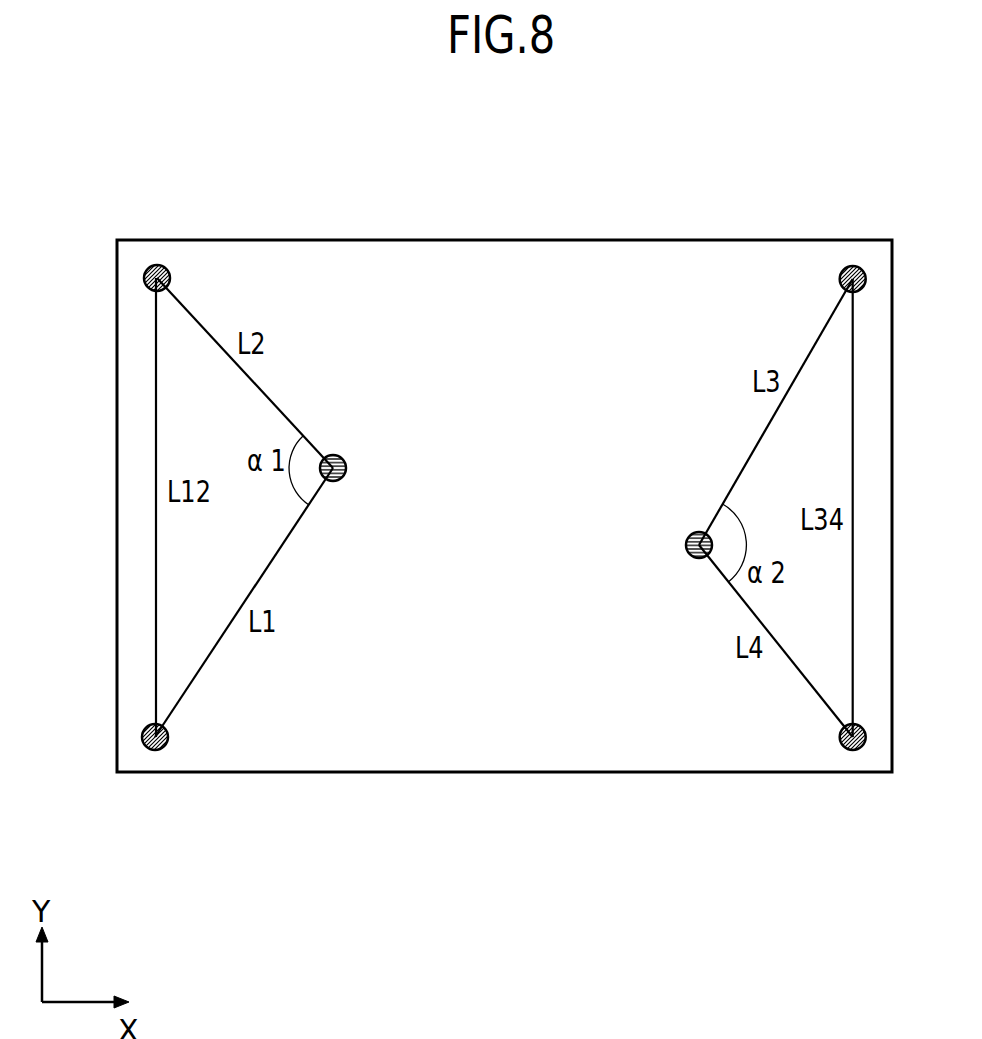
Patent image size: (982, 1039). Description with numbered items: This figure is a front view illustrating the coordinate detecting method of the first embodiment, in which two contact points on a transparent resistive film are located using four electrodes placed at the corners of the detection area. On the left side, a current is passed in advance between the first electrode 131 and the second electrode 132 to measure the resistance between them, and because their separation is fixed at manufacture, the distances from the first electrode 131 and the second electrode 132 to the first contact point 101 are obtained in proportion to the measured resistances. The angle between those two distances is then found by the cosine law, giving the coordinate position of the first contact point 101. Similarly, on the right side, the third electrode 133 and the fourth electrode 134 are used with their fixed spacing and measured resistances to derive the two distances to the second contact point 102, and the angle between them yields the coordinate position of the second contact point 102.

The first contact point 101 is at (343, 457).
The second contact point 102 is at (691, 533).
The first electrode 131 is at (145, 748).
The second electrode 132 is at (152, 266).
The third electrode 133 is at (848, 266).
The fourth electrode 134 is at (848, 748).